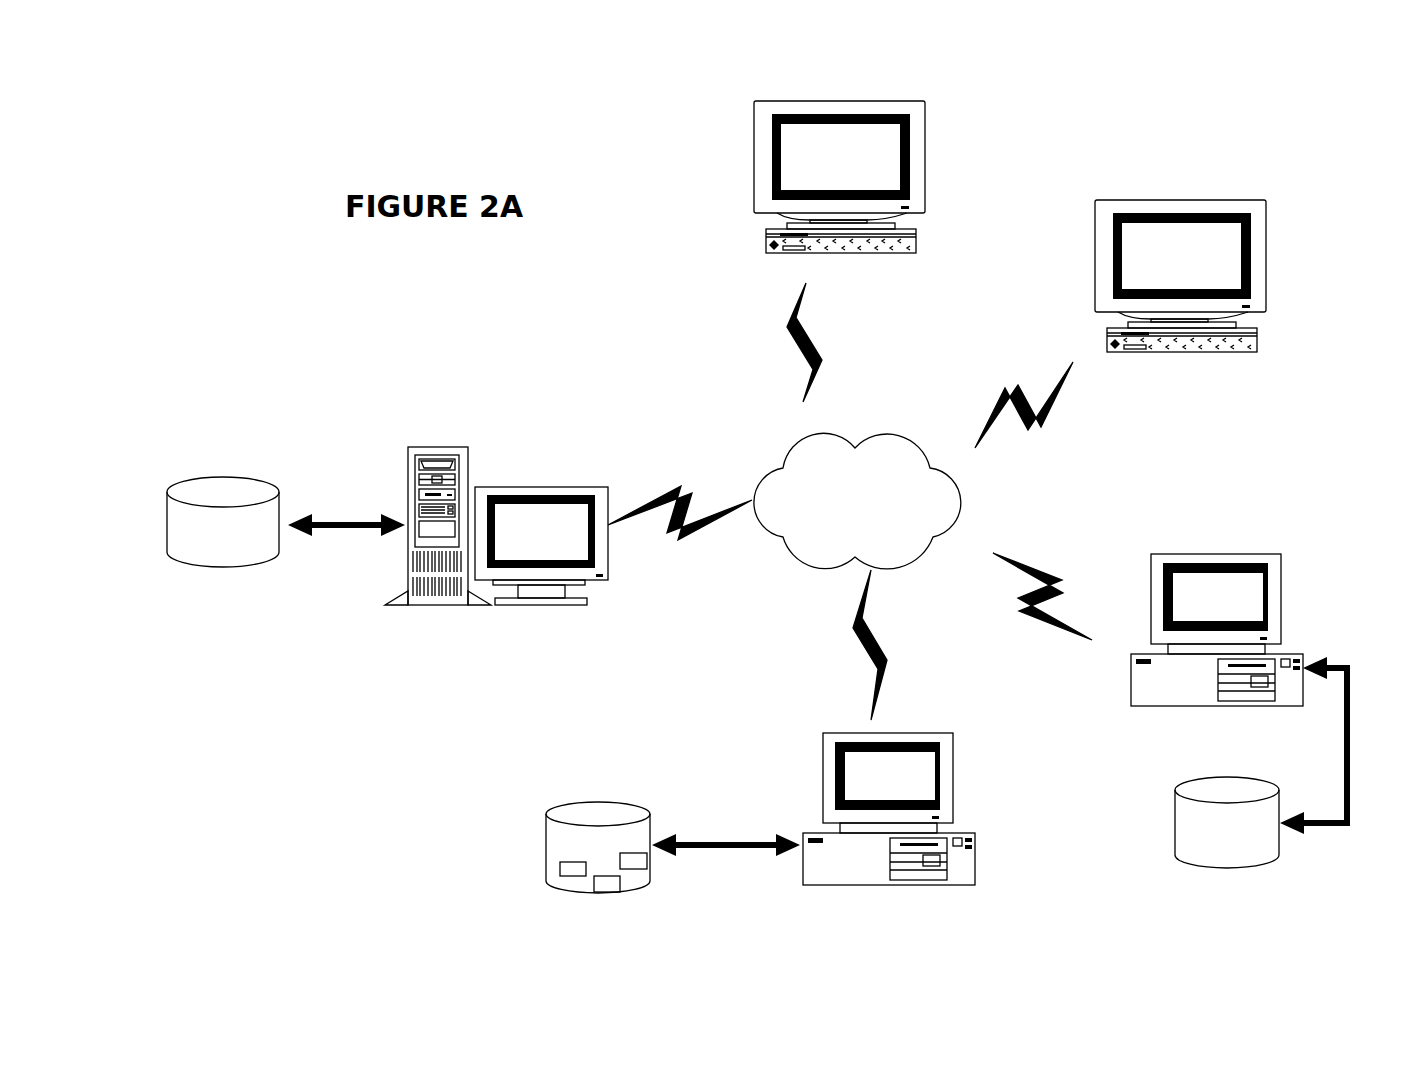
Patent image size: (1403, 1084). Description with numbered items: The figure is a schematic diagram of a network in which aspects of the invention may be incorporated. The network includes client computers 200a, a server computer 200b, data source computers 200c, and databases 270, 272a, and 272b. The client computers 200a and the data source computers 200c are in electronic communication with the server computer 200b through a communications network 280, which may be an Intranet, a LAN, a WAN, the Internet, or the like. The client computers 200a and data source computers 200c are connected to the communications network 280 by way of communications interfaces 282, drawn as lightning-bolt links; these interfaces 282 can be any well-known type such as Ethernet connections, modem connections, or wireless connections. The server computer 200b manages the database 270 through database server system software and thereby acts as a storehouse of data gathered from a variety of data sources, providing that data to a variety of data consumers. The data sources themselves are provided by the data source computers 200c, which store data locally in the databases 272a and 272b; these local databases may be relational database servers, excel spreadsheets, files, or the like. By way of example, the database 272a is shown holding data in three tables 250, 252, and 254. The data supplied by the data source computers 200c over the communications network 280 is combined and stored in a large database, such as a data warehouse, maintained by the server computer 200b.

The client computers 200a is at (838, 101).
The server computer 200b is at (430, 447).
The data source computers 200c is at (907, 733).
The database 270 is at (220, 477).
The database 272a is at (577, 825).
The database 272b is at (1205, 779).
The table 250 is at (560, 870).
The table 252 is at (606, 893).
The table 254 is at (636, 870).
The communications network 280 is at (826, 433).
The communications interfaces 282 is at (785, 343).